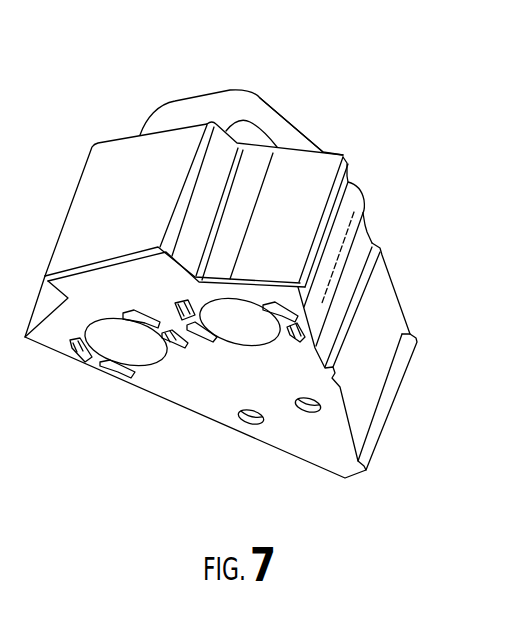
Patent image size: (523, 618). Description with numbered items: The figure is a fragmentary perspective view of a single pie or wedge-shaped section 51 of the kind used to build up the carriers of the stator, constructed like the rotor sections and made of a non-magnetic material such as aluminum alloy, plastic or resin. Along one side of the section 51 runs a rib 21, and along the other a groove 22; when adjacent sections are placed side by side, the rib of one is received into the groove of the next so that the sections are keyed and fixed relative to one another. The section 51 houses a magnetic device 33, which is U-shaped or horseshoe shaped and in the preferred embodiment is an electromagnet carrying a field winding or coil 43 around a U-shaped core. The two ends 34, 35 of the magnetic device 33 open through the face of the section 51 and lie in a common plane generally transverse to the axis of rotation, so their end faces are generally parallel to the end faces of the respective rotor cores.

The rib 21 is at (362, 202).
The groove 22 is at (366, 237).
The magnetic device 33 is at (283, 118).
The end 34 is at (113, 352).
The end 35 is at (236, 332).
The field winding or coil 43 is at (260, 97).
The pie or wedge-shaped section 51 is at (393, 300).